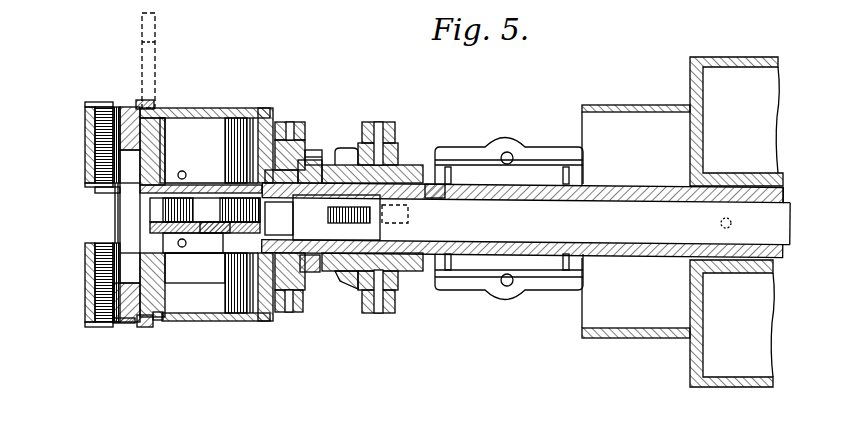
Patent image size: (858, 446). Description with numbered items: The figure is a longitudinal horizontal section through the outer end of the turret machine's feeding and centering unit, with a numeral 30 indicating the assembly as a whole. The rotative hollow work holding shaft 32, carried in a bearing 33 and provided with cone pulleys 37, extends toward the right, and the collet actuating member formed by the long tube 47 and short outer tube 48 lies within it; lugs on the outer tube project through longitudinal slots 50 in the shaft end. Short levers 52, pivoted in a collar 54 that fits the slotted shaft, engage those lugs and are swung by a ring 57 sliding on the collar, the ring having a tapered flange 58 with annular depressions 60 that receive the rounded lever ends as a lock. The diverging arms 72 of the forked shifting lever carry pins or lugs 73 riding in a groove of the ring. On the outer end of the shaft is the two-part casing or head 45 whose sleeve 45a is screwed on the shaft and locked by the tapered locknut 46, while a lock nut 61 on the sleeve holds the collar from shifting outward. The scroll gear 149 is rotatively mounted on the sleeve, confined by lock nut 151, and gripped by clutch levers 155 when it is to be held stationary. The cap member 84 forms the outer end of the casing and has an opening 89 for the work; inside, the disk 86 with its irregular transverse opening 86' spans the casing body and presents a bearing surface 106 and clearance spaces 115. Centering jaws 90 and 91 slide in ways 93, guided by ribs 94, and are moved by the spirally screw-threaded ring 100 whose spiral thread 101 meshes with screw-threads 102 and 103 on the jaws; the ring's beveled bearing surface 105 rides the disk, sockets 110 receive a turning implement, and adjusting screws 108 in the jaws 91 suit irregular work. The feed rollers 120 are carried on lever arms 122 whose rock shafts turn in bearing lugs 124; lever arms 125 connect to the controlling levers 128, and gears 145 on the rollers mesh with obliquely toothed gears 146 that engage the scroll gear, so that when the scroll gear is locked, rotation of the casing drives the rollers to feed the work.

The drive assembly 30 is at (576, 104).
The hollow work holding and work supporting shaft 32 is at (782, 196).
The bearing 33 is at (466, 182).
The cone pulleys 37 is at (690, 82).
The two-part casing or head 45 is at (220, 116).
The sleeve 45a is at (314, 272).
The tapered locknut 46 is at (279, 218).
The collet actuating member 47 is at (780, 225).
The outer tube 48 is at (438, 198).
The longitudinal slots 50 is at (350, 217).
The levers 52 is at (347, 212).
The collar 54 is at (418, 166).
The ring 57 is at (398, 152).
The flange 58 is at (343, 148).
The annular depressions 60 is at (346, 284).
The lock nut 61 is at (312, 168).
The diverging arms 72 is at (375, 122).
The pins or lugs 73 is at (380, 124).
The cap member 84 is at (88, 133).
The disk 86 is at (167, 200).
The irregular transverse opening 86' is at (170, 150).
The opening 89 is at (96, 190).
The centering jaws 90 is at (129, 194).
The centering jaws 91 is at (112, 112).
The ways 93 is at (86, 185).
The guide ribs 94 is at (118, 236).
The spirally screw-threaded ring 100 is at (159, 108).
The spiral thread 101 is at (125, 320).
The screw-threads 102 is at (129, 229).
The screw-threads 103 is at (134, 118).
The beveled annular bearing surface 105 is at (143, 328).
The annular bearing surface 106 is at (157, 320).
The adjusting screws 108 is at (100, 121).
The sockets 110 is at (148, 106).
The clearance spaces 115 is at (143, 160).
The feed rollers 120 is at (173, 210).
The lever arms 122 is at (185, 194).
The bearing lugs 124 is at (232, 134).
The lever arms 125 is at (230, 240).
The levers 128 is at (188, 205).
The gears 145 is at (237, 215).
The gears 146 is at (207, 233).
The scroll gear 149 is at (295, 140).
The lock nut 151 is at (303, 150).
The clutch levers 155 is at (283, 125).